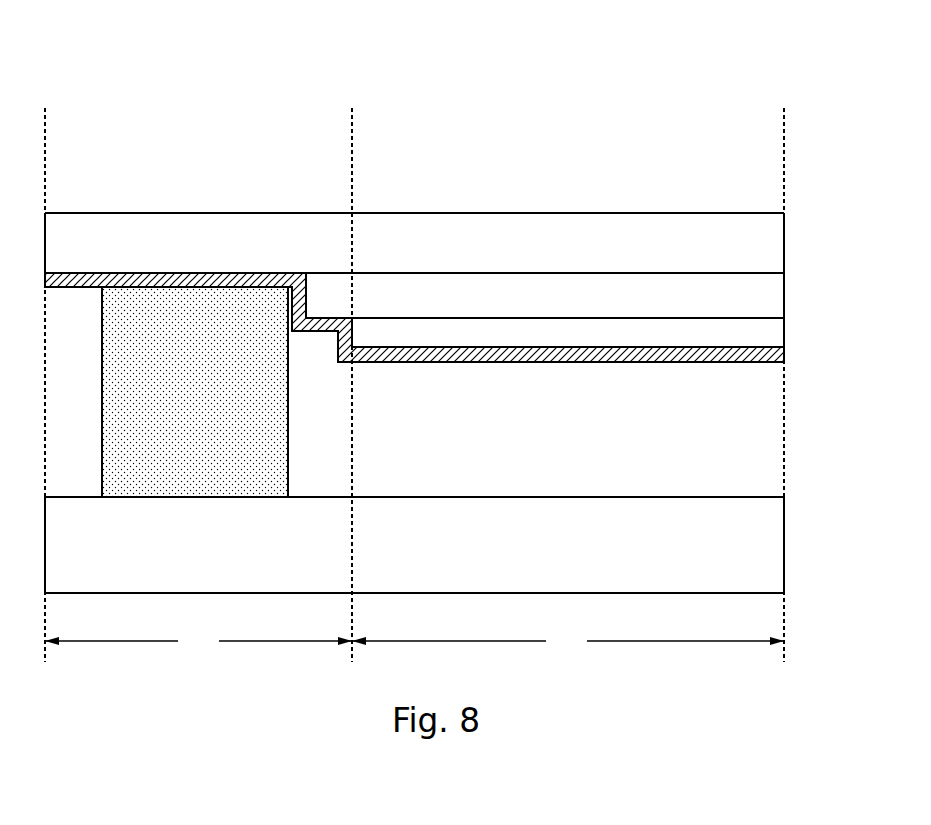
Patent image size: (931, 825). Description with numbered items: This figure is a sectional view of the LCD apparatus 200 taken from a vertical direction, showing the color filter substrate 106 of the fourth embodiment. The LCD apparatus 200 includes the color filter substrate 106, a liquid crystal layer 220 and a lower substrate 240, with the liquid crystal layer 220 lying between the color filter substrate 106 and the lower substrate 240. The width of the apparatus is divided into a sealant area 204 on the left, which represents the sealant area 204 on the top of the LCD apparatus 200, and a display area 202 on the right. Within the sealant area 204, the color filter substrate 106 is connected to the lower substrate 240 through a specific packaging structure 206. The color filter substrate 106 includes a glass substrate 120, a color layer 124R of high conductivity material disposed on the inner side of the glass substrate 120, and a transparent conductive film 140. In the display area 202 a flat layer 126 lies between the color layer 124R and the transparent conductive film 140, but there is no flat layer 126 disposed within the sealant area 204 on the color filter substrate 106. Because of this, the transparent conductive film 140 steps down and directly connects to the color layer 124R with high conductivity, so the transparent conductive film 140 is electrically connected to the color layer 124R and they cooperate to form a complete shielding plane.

The liquid crystal display apparatus 200 is at (302, 96).
The glass substrate 120 is at (492, 211).
The color layer 124R is at (568, 295).
The flat layer 126 is at (568, 332).
The transparent conductive film 140 is at (387, 363).
The packaging structure 206 is at (102, 398).
The color filter substrate 106 is at (803, 213).
The liquid crystal layer 220 is at (803, 362).
The lower substrate 240 is at (803, 497).
The sealant area 204 is at (198, 640).
The display area 202 is at (568, 640).